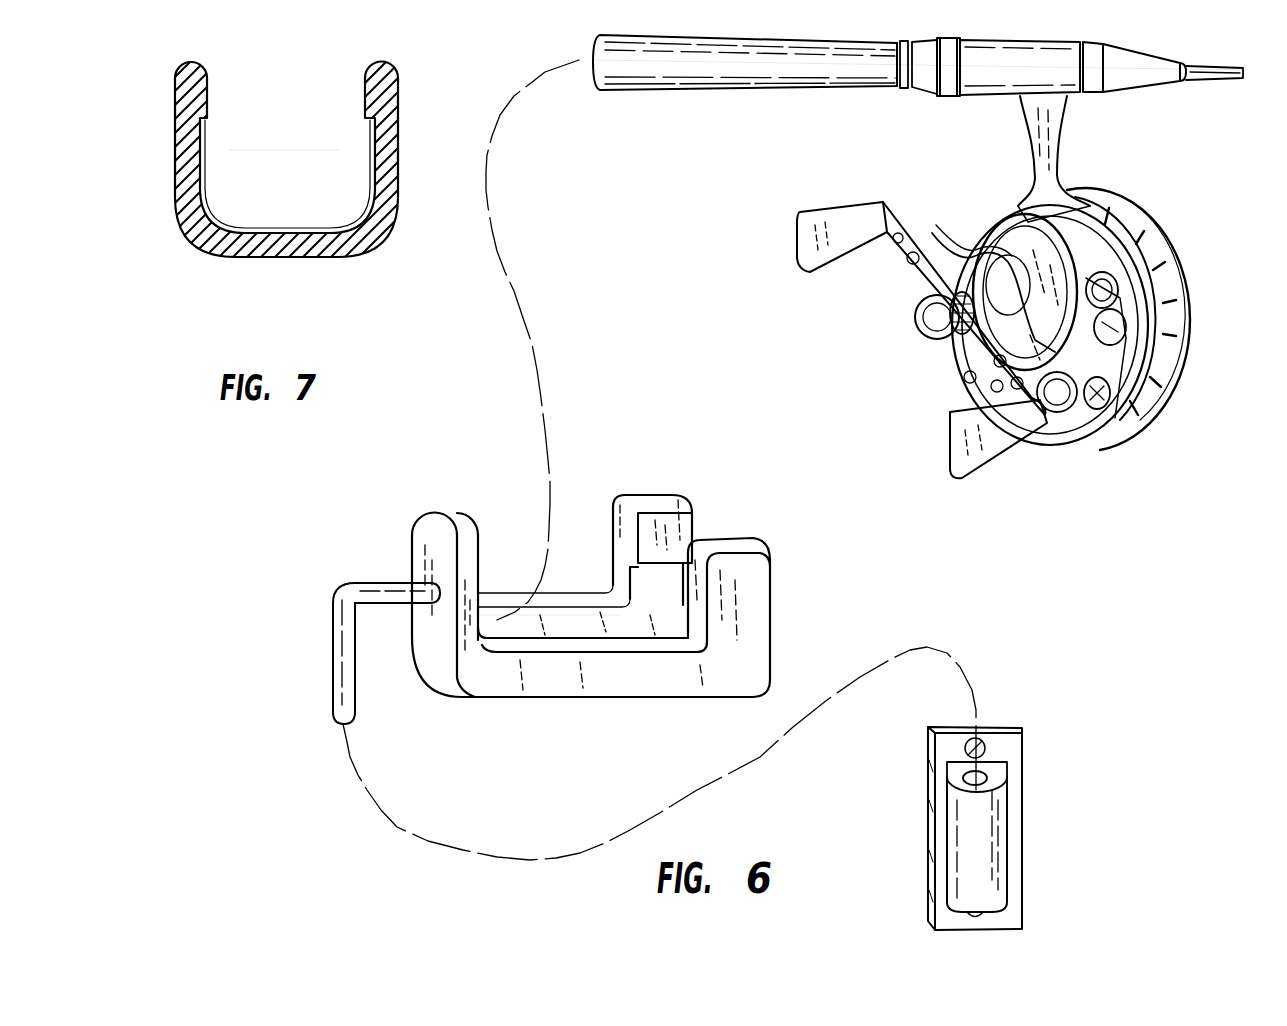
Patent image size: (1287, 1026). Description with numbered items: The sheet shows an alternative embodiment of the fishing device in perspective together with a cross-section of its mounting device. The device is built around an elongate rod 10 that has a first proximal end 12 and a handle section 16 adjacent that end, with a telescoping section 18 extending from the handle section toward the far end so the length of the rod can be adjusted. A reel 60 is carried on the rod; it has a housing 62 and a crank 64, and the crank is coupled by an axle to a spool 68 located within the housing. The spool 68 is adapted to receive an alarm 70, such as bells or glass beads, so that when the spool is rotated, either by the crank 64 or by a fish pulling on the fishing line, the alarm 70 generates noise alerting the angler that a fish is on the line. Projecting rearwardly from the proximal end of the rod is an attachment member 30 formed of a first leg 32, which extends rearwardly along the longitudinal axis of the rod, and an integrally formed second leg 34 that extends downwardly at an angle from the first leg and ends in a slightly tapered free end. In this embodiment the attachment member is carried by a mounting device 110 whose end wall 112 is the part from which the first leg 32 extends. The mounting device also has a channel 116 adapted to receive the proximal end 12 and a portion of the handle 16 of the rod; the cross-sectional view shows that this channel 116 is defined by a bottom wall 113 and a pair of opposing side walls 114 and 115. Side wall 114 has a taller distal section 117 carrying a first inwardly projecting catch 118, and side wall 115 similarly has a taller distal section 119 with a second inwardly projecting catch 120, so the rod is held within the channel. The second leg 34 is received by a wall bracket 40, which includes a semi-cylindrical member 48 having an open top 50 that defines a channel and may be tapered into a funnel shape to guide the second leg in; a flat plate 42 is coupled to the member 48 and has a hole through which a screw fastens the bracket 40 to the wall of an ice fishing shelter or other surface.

In FIG. 6, the elongate rod 10 is at (703, 138).
In FIG. 6, the first proximal end 12 is at (590, 58).
In FIG. 6, the handle section 16 is at (823, 68).
In FIG. 6, the telescoping section 18 is at (1223, 85).
In FIG. 6, the attachment member 30 is at (329, 619).
In FIG. 6, the first leg 32 is at (395, 583).
In FIG. 6, the second leg 34 is at (332, 650).
In FIG. 6, the wall bracket 40 is at (982, 813).
In FIG. 6, the flat plate 42 is at (1015, 913).
In FIG. 6, the semi-cylindrical member 48 is at (965, 830).
In FIG. 6, the open top 50 is at (978, 778).
In FIG. 6, the reel 60 is at (1019, 323).
In FIG. 6, the housing 62 is at (1055, 433).
In FIG. 6, the crank 64 is at (826, 255).
In FIG. 6, the spool 68 is at (1178, 270).
In FIG. 6, the alarm 70 is at (1122, 272).
In FIG. 7, the mounting device 110 is at (205, 256).
In FIG. 6, the mounting device 110 is at (619, 585).
In FIG. 6, the end wall 112 is at (430, 630).
In FIG. 7, the bottom wall 113 is at (290, 250).
In FIG. 6, the bottom wall 113 is at (578, 700).
In FIG. 6, the side wall 114 is at (560, 593).
In FIG. 6, the side wall 115 is at (632, 670).
In FIG. 7, the channel 116 is at (285, 158).
In FIG. 7, the taller distal section 117 is at (176, 140).
In FIG. 6, the taller distal section 117 is at (685, 496).
In FIG. 7, the first inwardly projecting catch 118 is at (208, 97).
In FIG. 6, the first inwardly projecting catch 118 is at (668, 527).
In FIG. 7, the taller distal section 119 is at (398, 170).
In FIG. 6, the taller distal section 119 is at (745, 580).
In FIG. 7, the second inwardly projecting catch 120 is at (367, 80).